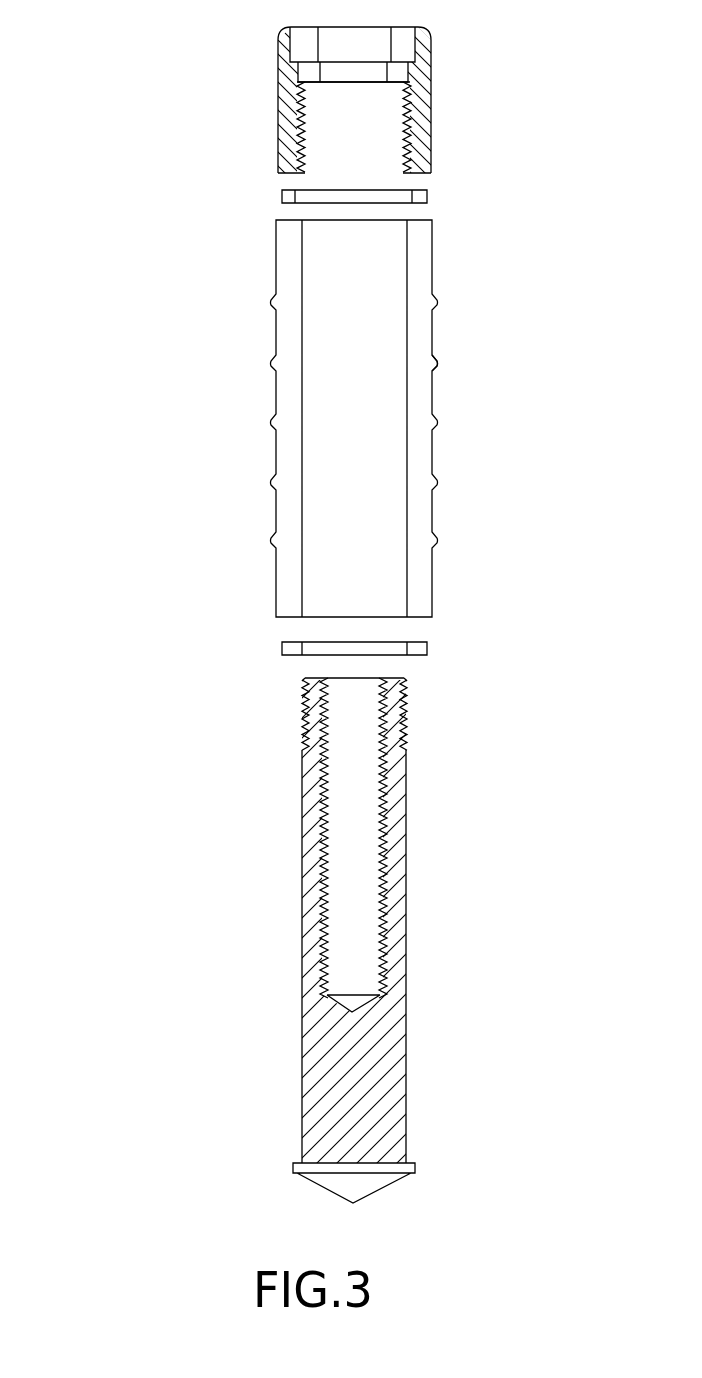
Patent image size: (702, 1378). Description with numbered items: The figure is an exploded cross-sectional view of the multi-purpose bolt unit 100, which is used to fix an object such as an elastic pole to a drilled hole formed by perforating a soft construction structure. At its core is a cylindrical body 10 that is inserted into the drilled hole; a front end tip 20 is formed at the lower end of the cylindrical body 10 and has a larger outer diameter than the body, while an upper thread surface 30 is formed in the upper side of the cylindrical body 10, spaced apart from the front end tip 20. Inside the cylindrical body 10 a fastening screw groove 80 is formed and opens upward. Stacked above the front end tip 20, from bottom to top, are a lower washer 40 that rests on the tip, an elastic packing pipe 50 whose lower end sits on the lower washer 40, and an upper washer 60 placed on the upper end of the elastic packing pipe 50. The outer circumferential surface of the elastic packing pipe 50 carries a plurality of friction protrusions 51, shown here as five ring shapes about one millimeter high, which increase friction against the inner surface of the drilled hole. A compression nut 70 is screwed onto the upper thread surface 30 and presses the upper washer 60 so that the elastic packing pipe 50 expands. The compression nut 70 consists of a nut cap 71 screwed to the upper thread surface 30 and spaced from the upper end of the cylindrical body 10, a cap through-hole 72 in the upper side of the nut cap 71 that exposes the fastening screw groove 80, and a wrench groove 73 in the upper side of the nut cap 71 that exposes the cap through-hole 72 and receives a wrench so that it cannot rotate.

The bolt unit 100 is at (165, 208).
The cylindrical body 10 is at (403, 920).
The front end tip 20 is at (383, 1186).
The upper thread surface 30 is at (415, 712).
The lower washer 40 is at (433, 650).
The elastic packing pipe 50 is at (407, 418).
The friction protrusions 51 is at (437, 363).
The upper washer 60 is at (432, 199).
The compression nut 70 is at (367, 91).
The nut cap 71 is at (290, 127).
The cap through-hole 72 is at (332, 73).
The wrench groove 73 is at (300, 43).
The fastening screw groove 80 is at (366, 931).